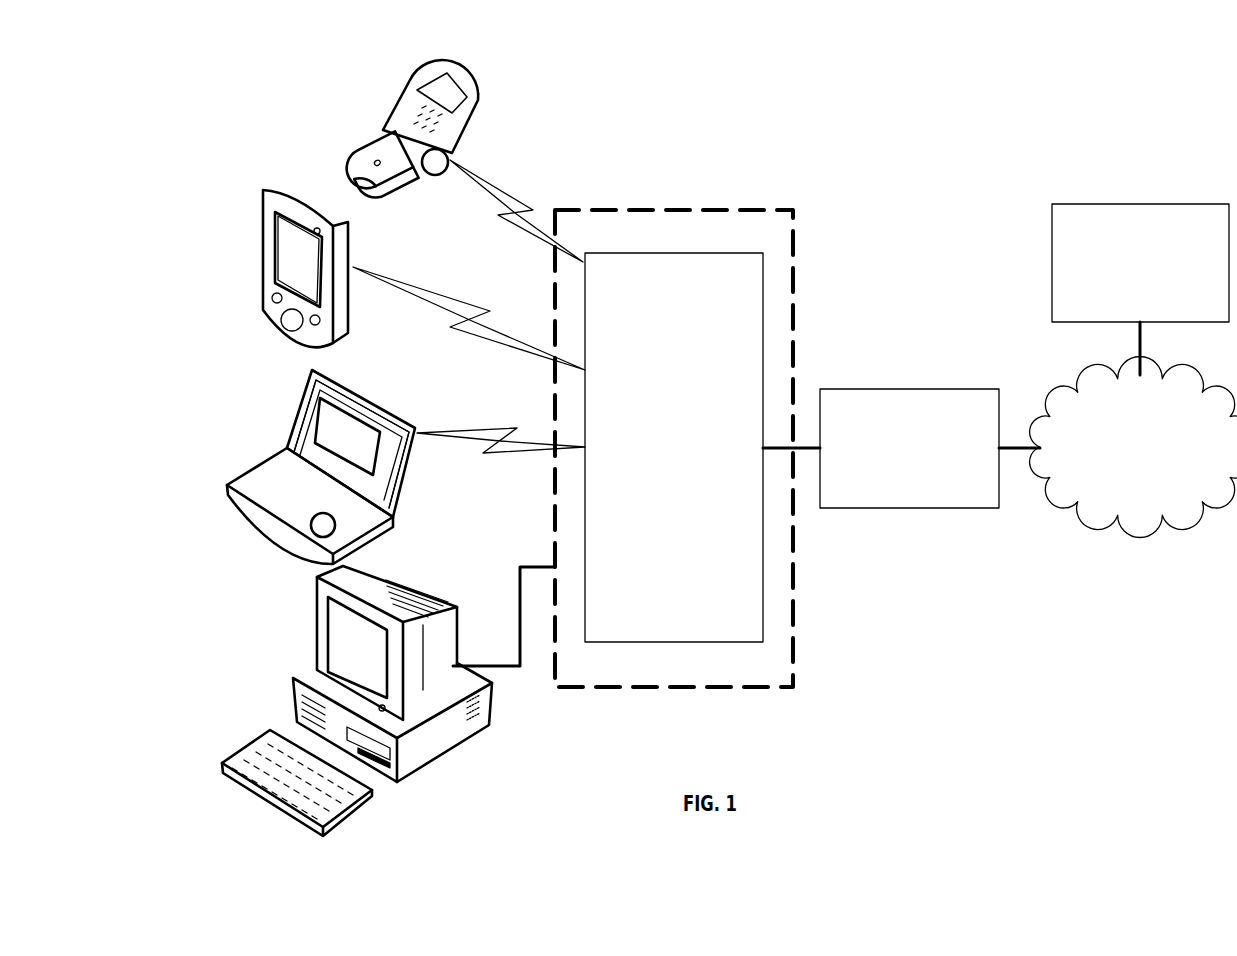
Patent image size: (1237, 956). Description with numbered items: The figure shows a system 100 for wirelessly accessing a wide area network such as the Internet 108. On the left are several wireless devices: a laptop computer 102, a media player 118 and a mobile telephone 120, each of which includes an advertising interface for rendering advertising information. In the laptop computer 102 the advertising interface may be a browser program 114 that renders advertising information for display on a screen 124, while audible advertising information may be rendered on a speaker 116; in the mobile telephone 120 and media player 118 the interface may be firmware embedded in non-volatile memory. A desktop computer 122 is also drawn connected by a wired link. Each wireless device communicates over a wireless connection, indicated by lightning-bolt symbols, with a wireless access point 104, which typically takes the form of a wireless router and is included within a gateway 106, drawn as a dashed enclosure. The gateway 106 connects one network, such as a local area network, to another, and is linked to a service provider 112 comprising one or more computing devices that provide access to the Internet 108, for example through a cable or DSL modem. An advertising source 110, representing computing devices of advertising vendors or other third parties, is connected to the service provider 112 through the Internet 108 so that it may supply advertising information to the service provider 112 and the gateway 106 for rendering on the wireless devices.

The system 100 is at (974, 178).
The laptop computer 102 is at (340, 452).
The wireless access point 104 is at (674, 447).
The gateway 106 is at (677, 210).
The Internet 108 is at (1133, 446).
The advertising source 110 is at (1140, 263).
The service provider 112 is at (909, 448).
The browser program 114 is at (353, 415).
The speaker 116 is at (312, 527).
The media player 118 is at (263, 253).
The mobile telephone 120 is at (368, 138).
The desktop computer 122 is at (293, 687).
The screen 124 is at (397, 460).